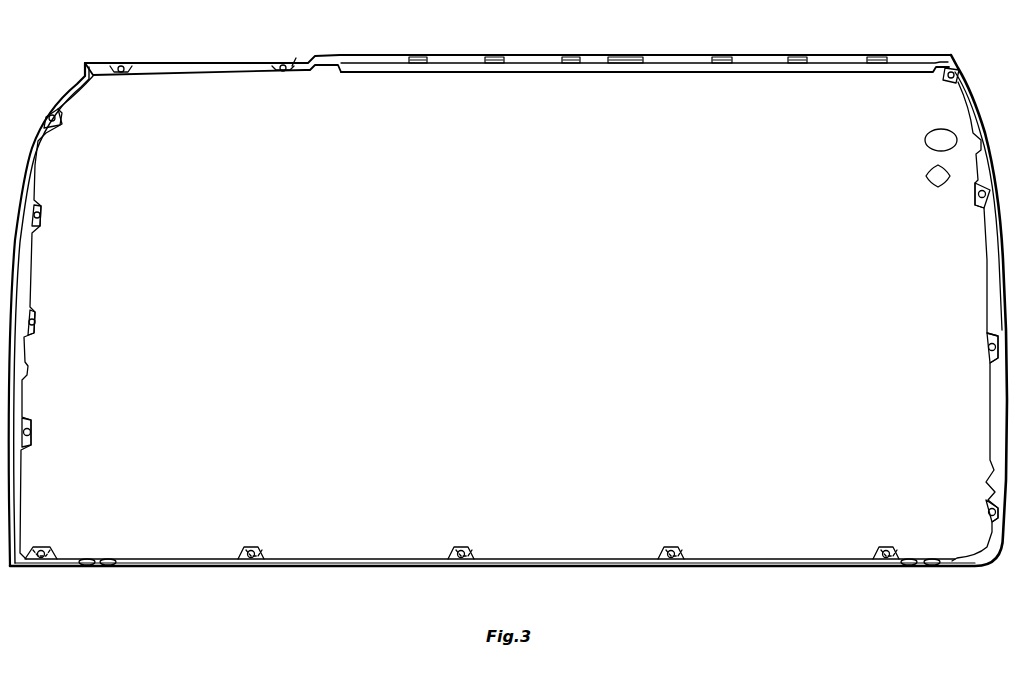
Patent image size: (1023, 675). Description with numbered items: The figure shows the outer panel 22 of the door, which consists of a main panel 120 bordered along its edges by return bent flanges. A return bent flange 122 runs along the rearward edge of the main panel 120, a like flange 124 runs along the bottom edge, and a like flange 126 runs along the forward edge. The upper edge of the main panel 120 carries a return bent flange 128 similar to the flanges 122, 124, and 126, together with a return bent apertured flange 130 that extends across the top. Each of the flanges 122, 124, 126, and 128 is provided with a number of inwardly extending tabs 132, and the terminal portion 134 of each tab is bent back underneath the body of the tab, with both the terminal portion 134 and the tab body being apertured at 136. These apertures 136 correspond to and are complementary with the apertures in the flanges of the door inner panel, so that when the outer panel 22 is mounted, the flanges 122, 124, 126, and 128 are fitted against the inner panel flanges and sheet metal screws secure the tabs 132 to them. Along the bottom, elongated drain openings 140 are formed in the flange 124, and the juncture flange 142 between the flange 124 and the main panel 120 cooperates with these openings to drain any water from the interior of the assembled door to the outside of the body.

The outer panel 22 is at (954, 568).
The main panel 120 is at (940, 114).
The return bent flange 122 is at (1001, 435).
The return bent flange 124 is at (607, 559).
The return bent flange 126 is at (22, 283).
The return bent flange 128 is at (205, 73).
The return bent apertured flange 130 is at (688, 62).
The tab 132 is at (279, 75).
The terminal portion 134 is at (282, 66).
The aperture 136 is at (121, 73).
The elongated drain opening 140 is at (88, 559).
The juncture flange 142 is at (656, 570).